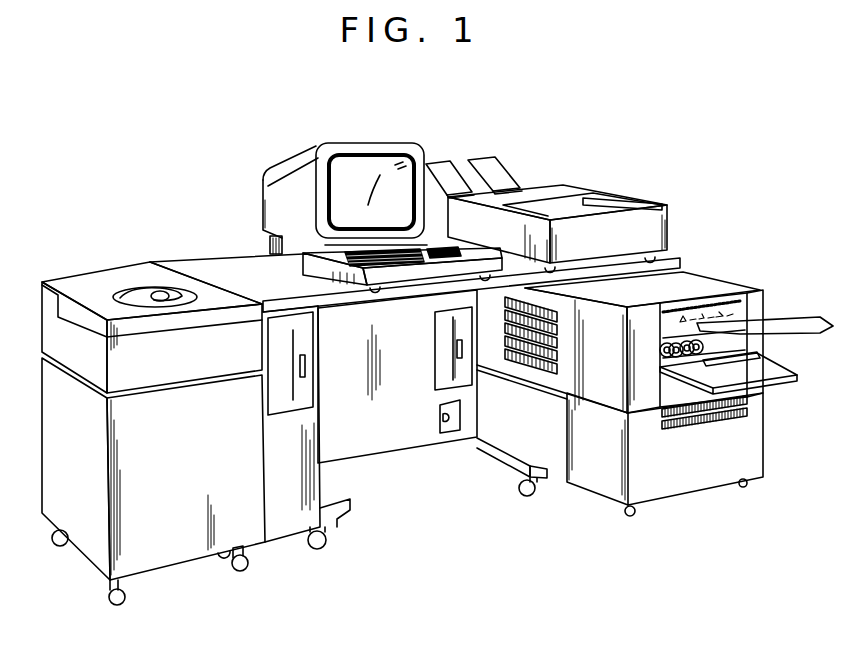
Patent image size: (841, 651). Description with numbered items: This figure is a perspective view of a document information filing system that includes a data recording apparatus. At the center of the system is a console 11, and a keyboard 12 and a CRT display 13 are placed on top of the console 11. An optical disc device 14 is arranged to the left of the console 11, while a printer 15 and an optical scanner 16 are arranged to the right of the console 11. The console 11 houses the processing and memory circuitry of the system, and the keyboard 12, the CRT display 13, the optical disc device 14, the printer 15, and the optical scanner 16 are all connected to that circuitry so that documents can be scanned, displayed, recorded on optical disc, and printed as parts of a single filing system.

The console 11 is at (402, 439).
The keyboard 12 is at (407, 272).
The CRT display 13 is at (363, 142).
The optical disc device 14 is at (96, 292).
The printer 15 is at (712, 282).
The optical scanner 16 is at (567, 187).